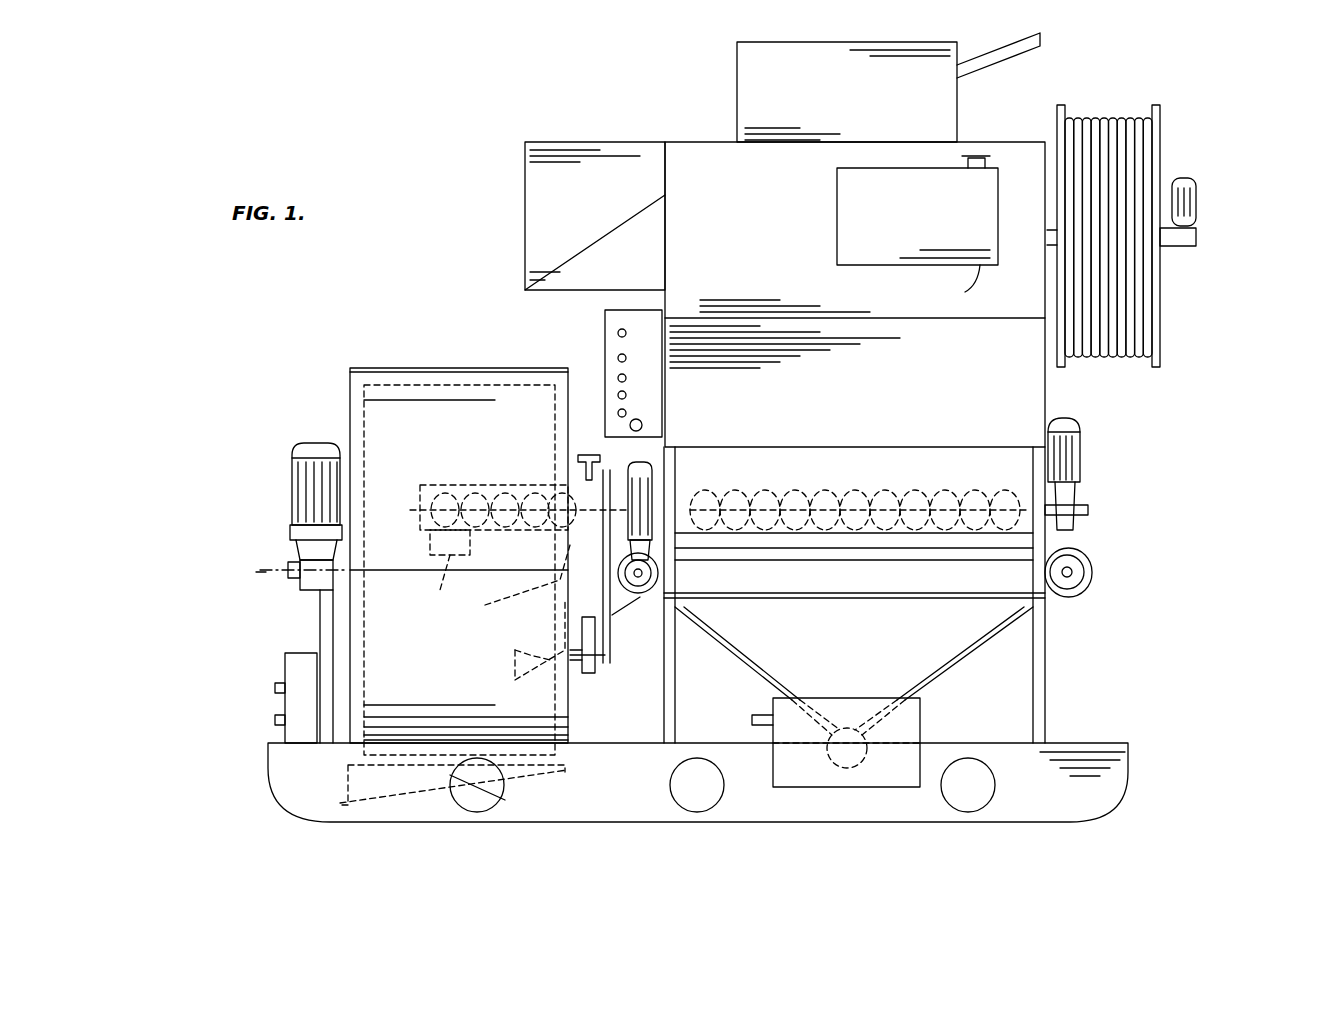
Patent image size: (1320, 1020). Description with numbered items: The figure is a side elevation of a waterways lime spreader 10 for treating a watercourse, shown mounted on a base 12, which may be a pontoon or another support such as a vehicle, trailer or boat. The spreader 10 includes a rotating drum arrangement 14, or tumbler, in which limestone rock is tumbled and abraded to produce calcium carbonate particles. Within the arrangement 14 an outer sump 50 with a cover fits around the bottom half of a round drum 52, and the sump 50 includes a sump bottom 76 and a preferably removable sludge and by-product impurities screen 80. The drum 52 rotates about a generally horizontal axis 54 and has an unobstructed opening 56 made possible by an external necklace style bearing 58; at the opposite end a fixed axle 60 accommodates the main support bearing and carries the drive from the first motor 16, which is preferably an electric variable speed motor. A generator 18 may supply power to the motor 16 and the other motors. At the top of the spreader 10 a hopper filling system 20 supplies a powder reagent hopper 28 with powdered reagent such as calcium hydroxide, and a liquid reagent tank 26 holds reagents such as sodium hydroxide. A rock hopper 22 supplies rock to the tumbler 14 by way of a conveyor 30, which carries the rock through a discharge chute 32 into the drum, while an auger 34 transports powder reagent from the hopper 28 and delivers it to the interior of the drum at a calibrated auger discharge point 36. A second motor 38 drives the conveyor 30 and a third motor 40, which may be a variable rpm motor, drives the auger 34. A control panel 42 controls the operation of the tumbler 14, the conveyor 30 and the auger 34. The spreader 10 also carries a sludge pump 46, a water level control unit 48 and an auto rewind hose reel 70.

The waterways lime spreader 10 is at (1075, 668).
The base 12 is at (1105, 758).
The rotating drum arrangement 14 is at (330, 368).
The first motor 16 is at (300, 495).
The generator 18 is at (540, 185).
The hopper filling system 20 is at (838, 106).
The rock hopper 22 is at (770, 468).
The liquid reagent tank 26 is at (930, 228).
The powder reagent hopper 28 is at (770, 228).
The conveyor 30 is at (1075, 575).
The discharge chute 32 is at (515, 650).
The auger 34 is at (860, 495).
The calibrated auger discharge point 36 is at (408, 590).
The second motor 38 is at (640, 480).
The third motor 40 is at (1068, 462).
The control panel 42 is at (605, 335).
The sludge pump 46 is at (290, 672).
The water level control unit 48 is at (917, 720).
The outer sump 50 is at (372, 437).
The drum 52 is at (400, 405).
The horizontal axis 54 is at (262, 570).
The unobstructed opening 56 is at (550, 588).
The external necklace style bearing 58 is at (590, 673).
The fixed axle 60 is at (295, 553).
The auto rewind hose reel 70 is at (1128, 158).
The sump bottom 76 is at (485, 800).
The sludge and by-product impurities screen 80 is at (345, 790).